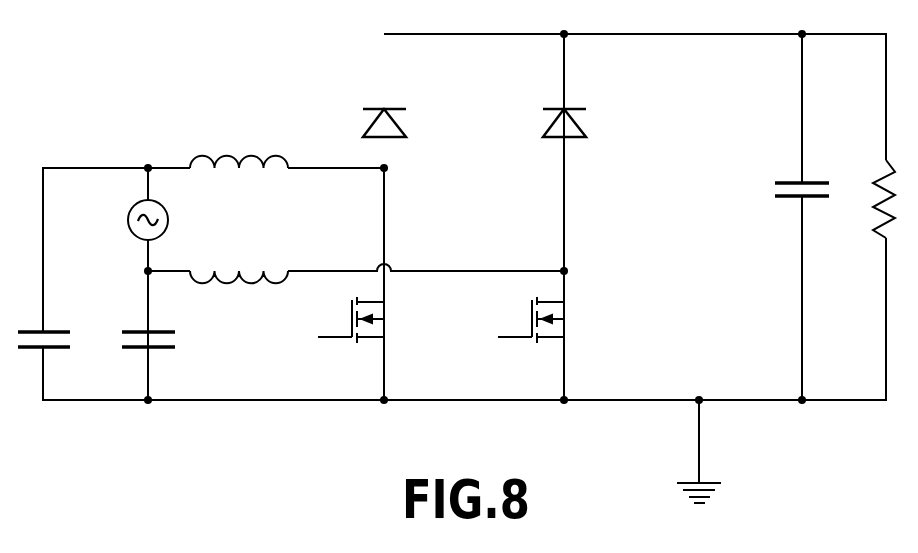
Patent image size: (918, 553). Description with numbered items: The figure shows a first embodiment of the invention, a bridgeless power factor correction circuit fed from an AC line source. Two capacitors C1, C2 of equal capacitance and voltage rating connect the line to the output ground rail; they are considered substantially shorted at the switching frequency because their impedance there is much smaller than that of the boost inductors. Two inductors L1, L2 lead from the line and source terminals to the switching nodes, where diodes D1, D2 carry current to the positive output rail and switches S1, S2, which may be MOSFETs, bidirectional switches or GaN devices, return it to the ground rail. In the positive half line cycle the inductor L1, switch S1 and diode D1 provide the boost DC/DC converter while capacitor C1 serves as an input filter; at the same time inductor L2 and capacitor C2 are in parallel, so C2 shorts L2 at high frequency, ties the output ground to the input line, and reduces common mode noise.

The capacitor C1 is at (44, 392).
The capacitor C2 is at (148, 392).
The inductor L1 is at (239, 144).
The inductor L2 is at (239, 297).
The diode D1 is at (409, 126).
The diode D2 is at (590, 126).
The switch S1 is at (370, 320).
The switch S2 is at (551, 320).